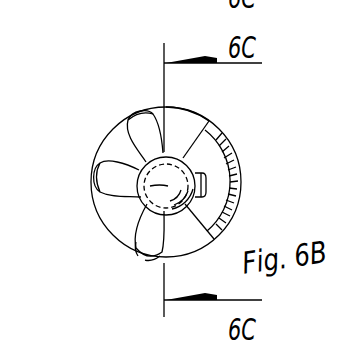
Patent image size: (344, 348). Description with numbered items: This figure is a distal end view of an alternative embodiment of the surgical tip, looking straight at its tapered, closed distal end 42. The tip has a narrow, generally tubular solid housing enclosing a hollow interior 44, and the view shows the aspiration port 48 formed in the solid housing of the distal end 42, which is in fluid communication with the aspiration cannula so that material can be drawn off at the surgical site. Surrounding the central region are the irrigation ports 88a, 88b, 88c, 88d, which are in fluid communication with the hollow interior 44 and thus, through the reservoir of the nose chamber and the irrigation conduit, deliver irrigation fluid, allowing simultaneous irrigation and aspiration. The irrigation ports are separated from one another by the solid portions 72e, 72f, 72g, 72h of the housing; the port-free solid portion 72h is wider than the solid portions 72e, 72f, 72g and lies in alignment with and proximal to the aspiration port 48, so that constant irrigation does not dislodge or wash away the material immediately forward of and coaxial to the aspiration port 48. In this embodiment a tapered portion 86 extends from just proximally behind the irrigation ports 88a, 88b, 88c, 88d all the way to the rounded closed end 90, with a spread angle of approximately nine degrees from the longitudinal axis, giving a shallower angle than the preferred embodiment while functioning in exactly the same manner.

The distal end 42 is at (198, 114).
The hollow interior 44 is at (197, 122).
The aspiration port 48 is at (207, 168).
The tapered portion 86 is at (148, 118).
The solid portion 72e is at (153, 122).
The solid portion 72f is at (95, 158).
The solid portion 72g is at (143, 254).
The port-free solid portion 72h is at (217, 150).
The irrigation port 88a is at (183, 128).
The irrigation port 88b is at (128, 152).
The irrigation port 88c is at (115, 233).
The irrigation port 88d is at (172, 236).
The rounded closed end 90 is at (150, 186).